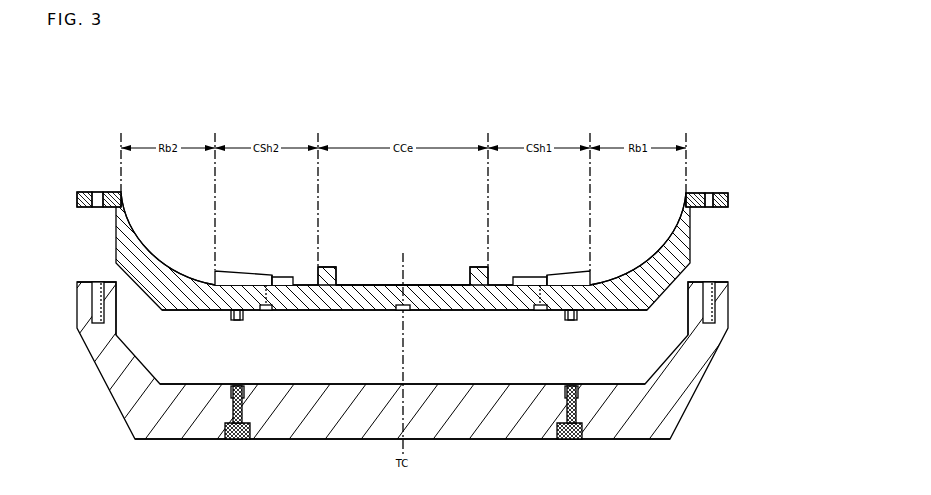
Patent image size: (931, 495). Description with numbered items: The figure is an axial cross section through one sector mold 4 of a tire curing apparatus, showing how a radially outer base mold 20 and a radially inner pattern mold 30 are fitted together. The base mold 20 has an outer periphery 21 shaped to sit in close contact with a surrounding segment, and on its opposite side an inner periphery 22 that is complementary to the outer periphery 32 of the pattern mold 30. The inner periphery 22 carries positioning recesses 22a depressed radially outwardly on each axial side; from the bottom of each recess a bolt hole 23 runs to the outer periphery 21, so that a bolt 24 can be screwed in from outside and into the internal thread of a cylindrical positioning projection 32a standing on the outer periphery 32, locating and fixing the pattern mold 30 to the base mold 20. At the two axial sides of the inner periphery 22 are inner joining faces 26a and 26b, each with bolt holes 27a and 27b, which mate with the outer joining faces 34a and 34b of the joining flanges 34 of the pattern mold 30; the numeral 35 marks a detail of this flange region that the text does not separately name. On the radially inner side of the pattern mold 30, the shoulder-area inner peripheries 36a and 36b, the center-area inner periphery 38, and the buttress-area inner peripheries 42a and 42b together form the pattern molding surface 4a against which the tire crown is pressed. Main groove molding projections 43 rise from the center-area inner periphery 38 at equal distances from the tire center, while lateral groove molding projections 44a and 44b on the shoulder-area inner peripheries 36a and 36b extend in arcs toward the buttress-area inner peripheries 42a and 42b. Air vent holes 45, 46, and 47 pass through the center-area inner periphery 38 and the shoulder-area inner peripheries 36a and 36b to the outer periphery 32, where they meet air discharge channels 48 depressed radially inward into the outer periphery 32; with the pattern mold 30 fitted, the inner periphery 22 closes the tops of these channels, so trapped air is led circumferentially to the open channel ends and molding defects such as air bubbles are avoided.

The sector mold 4 is at (806, 163).
The pattern molding surface 4a is at (361, 204).
The base mold 20 is at (731, 326).
The outer periphery 21 is at (447, 440).
The inner periphery 22 is at (463, 384).
The positioning recess 22a is at (238, 386).
The bolt hole 23 is at (243, 410).
The bolt 24 is at (237, 440).
The inner joining face 26a is at (699, 282).
The inner joining face 26b is at (110, 282).
The bolt hole 27a is at (709, 283).
The bolt hole 27b is at (100, 283).
The pattern mold 30 is at (719, 193).
The outer periphery 32 is at (367, 311).
The positioning projection 32a is at (231, 317).
The joining flange 34 is at (122, 200).
The outer joining face 34a is at (713, 208).
The outer joining face 34b is at (85, 207).
The flange groove 35 is at (104, 192).
The shoulder-area inner periphery 36a is at (518, 277).
The shoulder-area inner periphery 36b is at (290, 277).
The center-area inner periphery 38 is at (367, 285).
The buttress-area inner periphery 42a is at (612, 280).
The buttress-area inner periphery 42b is at (197, 280).
The main groove molding projection 43 is at (327, 267).
The lateral groove molding projection 44a is at (585, 272).
The lateral groove molding projection 44b is at (226, 271).
The air vent hole 45 is at (407, 285).
The air vent hole 46 is at (547, 277).
The air vent hole 47 is at (273, 279).
The air discharge channel 48 is at (266, 311).